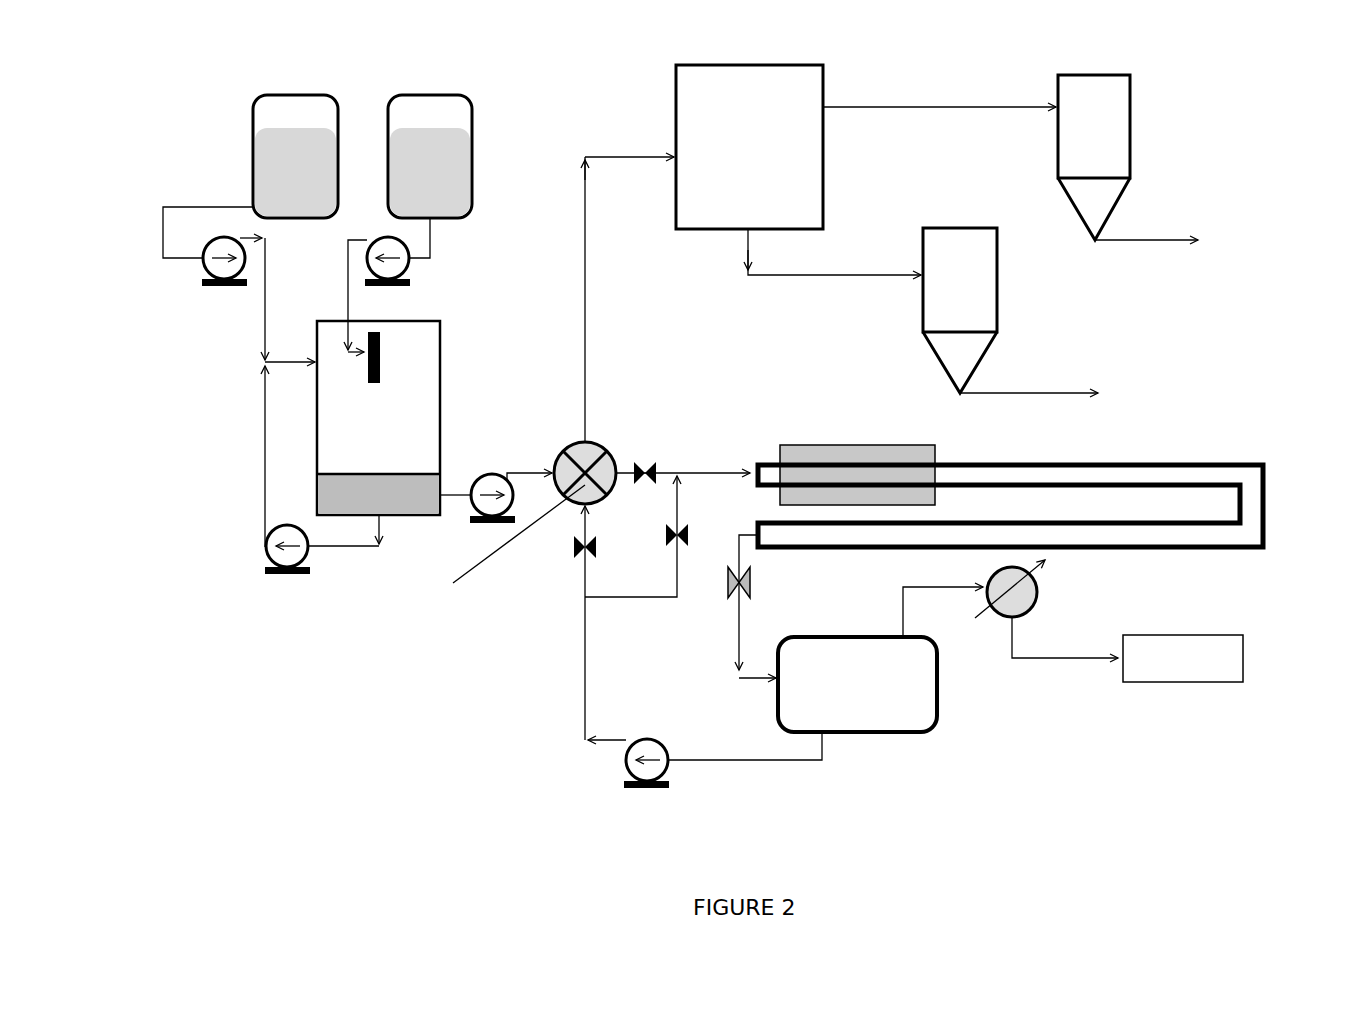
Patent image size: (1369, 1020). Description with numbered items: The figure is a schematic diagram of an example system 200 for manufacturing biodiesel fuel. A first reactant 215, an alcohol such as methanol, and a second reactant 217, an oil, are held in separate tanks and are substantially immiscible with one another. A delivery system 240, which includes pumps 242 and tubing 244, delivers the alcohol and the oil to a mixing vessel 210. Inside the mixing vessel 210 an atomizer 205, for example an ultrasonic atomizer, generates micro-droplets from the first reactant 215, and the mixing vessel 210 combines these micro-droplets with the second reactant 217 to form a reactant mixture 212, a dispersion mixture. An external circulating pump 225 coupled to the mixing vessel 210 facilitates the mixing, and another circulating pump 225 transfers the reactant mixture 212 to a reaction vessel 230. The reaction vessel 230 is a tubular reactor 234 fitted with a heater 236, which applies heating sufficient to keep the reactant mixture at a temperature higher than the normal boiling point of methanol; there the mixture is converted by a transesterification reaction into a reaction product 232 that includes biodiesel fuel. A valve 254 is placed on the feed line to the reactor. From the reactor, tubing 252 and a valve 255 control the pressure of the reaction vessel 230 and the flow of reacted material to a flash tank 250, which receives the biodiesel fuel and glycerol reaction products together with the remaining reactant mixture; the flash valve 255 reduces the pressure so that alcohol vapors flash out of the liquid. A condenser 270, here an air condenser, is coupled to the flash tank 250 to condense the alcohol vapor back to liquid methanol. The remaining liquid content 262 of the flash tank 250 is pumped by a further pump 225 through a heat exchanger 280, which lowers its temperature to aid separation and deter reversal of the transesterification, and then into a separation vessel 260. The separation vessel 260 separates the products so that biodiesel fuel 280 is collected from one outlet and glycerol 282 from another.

The system 200 is at (1252, 51).
The atomizer 205 is at (392, 338).
The mixing vessel 210 is at (442, 428).
The reactant mixture 212 is at (340, 483).
The first reactant 215 is at (466, 185).
The second reactant 217 is at (266, 168).
The circulating pump 225 is at (266, 550).
The reaction vessel 230 is at (1266, 462).
The reaction product 232 is at (752, 527).
The tubular reactor 234 is at (1265, 511).
The heater 236 is at (820, 444).
The delivery system 240 is at (168, 186).
The pump 242 is at (204, 265).
The tubing 244 is at (263, 328).
The flash tank 250 is at (940, 702).
The tubing 252 is at (739, 627).
The valve 254 is at (655, 464).
The valve 255 is at (748, 568).
The separation vessel 260 is at (820, 64).
The remaining liquid content 262 is at (870, 717).
The condenser 270 is at (1037, 585).
The heat exchanger 280 is at (607, 458).
The glycerol 282 is at (980, 318).